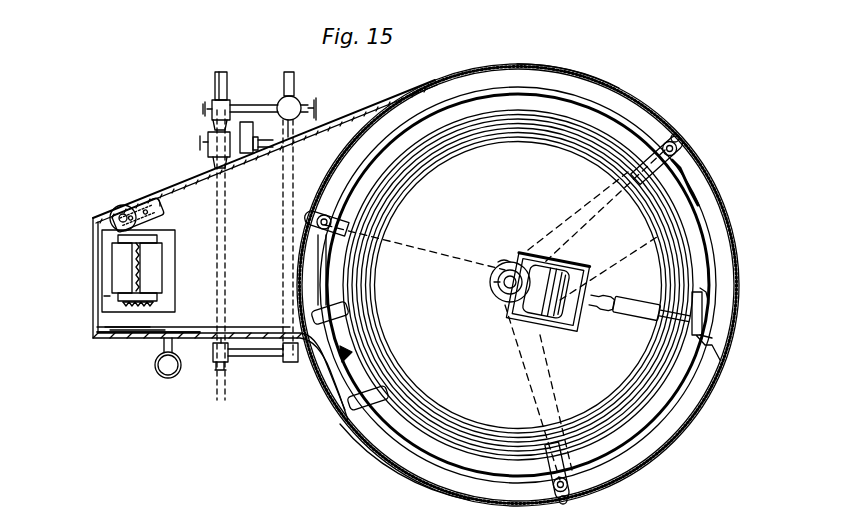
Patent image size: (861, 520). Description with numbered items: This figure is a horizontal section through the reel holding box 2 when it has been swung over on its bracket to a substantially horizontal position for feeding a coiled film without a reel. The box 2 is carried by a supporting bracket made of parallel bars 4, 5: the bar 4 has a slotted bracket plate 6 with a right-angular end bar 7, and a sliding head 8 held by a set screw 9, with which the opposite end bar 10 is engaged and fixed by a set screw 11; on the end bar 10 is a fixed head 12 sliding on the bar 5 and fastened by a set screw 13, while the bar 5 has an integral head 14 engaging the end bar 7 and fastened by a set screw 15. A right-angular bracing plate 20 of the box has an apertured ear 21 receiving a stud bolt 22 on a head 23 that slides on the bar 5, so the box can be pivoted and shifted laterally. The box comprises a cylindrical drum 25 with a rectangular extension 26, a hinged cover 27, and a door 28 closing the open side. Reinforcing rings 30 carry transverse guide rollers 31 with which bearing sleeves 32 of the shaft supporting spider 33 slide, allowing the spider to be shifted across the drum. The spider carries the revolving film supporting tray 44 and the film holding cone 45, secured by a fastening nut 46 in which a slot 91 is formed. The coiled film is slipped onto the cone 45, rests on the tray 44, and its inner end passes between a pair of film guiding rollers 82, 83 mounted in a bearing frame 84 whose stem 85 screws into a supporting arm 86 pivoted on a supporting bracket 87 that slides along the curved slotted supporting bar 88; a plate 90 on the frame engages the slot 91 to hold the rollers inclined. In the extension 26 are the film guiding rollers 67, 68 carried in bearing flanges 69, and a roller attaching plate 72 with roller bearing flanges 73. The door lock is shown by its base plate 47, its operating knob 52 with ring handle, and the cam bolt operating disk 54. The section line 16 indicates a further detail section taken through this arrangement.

The reel holding box 2 is at (632, 96).
The bar 4 is at (292, 98).
The bar 5 is at (222, 70).
The slotted bracket plate 6 is at (290, 362).
The end bar 7 is at (268, 358).
The head 8 is at (303, 112).
The set screw 9 is at (322, 112).
The end bar 10 is at (256, 112).
The set screw 11 is at (286, 90).
The head 12 is at (212, 100).
The set screw 13 is at (205, 105).
The head 14 is at (69, 278).
The set screw 15 is at (118, 332).
The lower valve / section line 16 is at (175, 164).
The bracing plate 20 is at (266, 148).
The apertured ear 21 is at (228, 100).
The stud bolt 22 is at (282, 140).
The head 23 is at (216, 180).
The drum 25 is at (725, 218).
The extension 26 is at (92, 240).
The hinged cover 27 is at (362, 450).
The door 28 is at (584, 92).
The reinforcing rings 30 is at (392, 112).
The guide rollers 31 is at (678, 140).
The bearing sleeves 32 is at (672, 140).
The spider 33 is at (570, 218).
The film supporting tray 44 is at (518, 285).
The film holding cone 45 is at (500, 290).
The fastening nut 46 is at (502, 272).
The base plate 47 is at (138, 305).
The knob 52 is at (160, 362).
The cam disk 54 is at (148, 330).
The film guiding roller 67 is at (148, 200).
The film guiding roller 68 is at (118, 216).
The bearing flanges 69 is at (136, 208).
The roller attaching plate 72 is at (105, 300).
The roller bearing flanges 73 is at (98, 258).
The film guiding roller 82 is at (520, 320).
The film guiding roller 83 is at (585, 272).
The bearing frame 84 is at (565, 262).
The stem 85 is at (602, 304).
The supporting arm 86 is at (628, 298).
The supporting bracket 87 is at (690, 320).
The supporting bar 88 is at (690, 182).
The plate 90 is at (514, 272).
The slot 91 is at (508, 298).